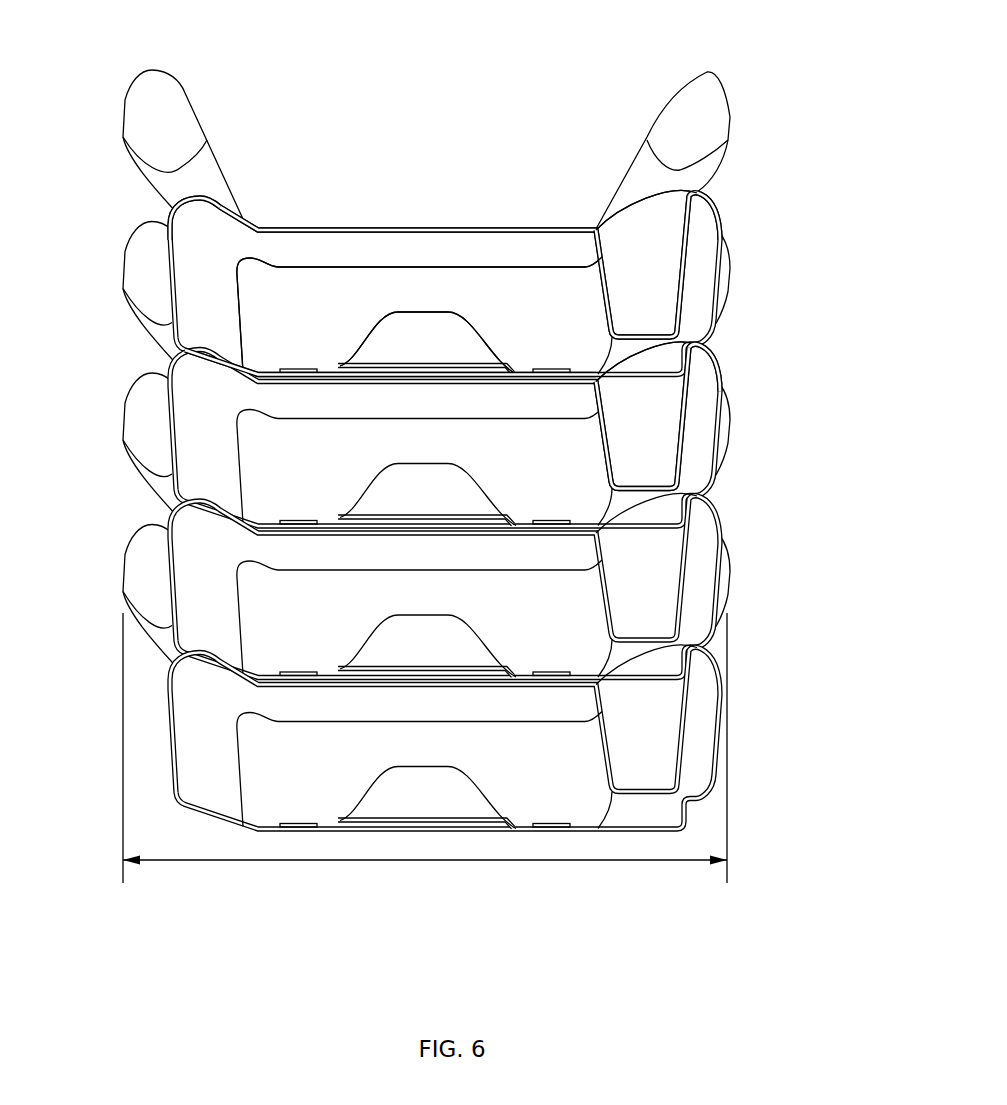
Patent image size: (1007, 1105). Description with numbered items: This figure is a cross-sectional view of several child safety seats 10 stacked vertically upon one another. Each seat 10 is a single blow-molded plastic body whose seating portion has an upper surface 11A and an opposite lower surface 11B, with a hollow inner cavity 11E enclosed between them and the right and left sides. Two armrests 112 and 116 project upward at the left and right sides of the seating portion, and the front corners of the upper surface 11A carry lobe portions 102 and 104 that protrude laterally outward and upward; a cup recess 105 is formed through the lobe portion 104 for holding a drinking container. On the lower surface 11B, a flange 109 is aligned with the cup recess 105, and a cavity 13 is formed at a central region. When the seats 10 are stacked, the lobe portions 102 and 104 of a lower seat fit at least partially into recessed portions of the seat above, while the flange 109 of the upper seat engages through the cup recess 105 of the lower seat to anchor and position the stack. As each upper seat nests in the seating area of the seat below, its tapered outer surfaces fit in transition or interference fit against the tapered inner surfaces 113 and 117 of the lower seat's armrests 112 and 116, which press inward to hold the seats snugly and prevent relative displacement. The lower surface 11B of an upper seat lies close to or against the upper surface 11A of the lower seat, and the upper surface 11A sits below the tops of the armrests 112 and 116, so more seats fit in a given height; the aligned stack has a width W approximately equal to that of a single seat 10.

The child safety seat 10 is at (461, 417).
The upper surface 11A is at (428, 226).
The lower surface 11B is at (273, 367).
The inner cavity 11E is at (417, 293).
The cavity 13 is at (437, 333).
The lobe portion 102 is at (182, 202).
The lobe portion 104 is at (712, 205).
The cup recess 105 is at (660, 233).
The flange 109 is at (689, 366).
The armrest 112 is at (143, 66).
The tapered inner surface 113 is at (200, 111).
The armrest 116 is at (708, 68).
The tapered inner surface 117 is at (657, 120).
The width W is at (425, 752).